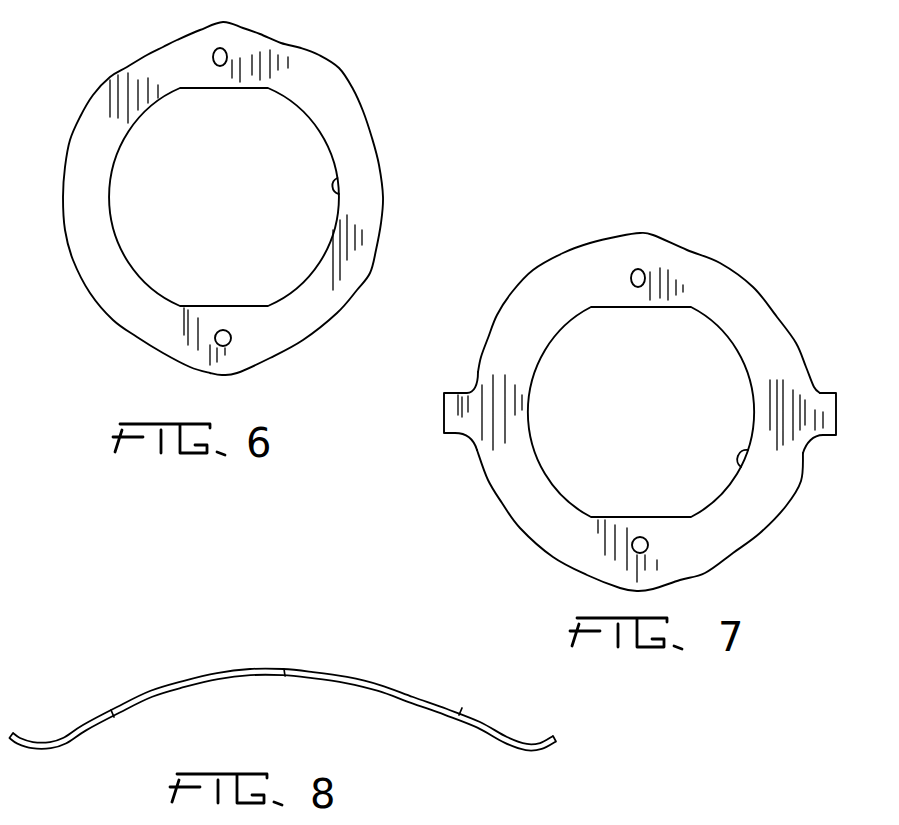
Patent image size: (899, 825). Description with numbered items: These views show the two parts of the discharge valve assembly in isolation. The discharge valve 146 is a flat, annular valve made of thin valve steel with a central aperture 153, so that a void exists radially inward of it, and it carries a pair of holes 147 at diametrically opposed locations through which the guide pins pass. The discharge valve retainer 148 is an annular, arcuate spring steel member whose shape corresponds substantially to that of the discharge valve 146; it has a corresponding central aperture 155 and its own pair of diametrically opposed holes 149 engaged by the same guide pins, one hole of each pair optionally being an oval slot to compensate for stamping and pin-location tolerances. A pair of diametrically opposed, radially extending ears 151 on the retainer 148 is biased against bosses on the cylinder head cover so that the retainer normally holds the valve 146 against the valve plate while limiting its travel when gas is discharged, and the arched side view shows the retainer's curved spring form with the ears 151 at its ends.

In FIG. 6, the discharge valve 146 is at (372, 101).
In FIG. 6, the holes 147 is at (228, 55).
In FIG. 7, the discharge valve retainer 148 is at (752, 253).
In FIG. 8, the discharge valve retainer 148 is at (182, 656).
In FIG. 7, the holes 149 is at (631, 278).
In FIG. 8, the holes 149 is at (290, 669).
In FIG. 7, the ears 151 is at (453, 393).
In FIG. 8, the ears 151 is at (43, 738).
In FIG. 6, the central aperture 153 is at (338, 188).
In FIG. 7, the central aperture 155 is at (745, 466).
In FIG. 8, the central aperture 155 is at (466, 705).